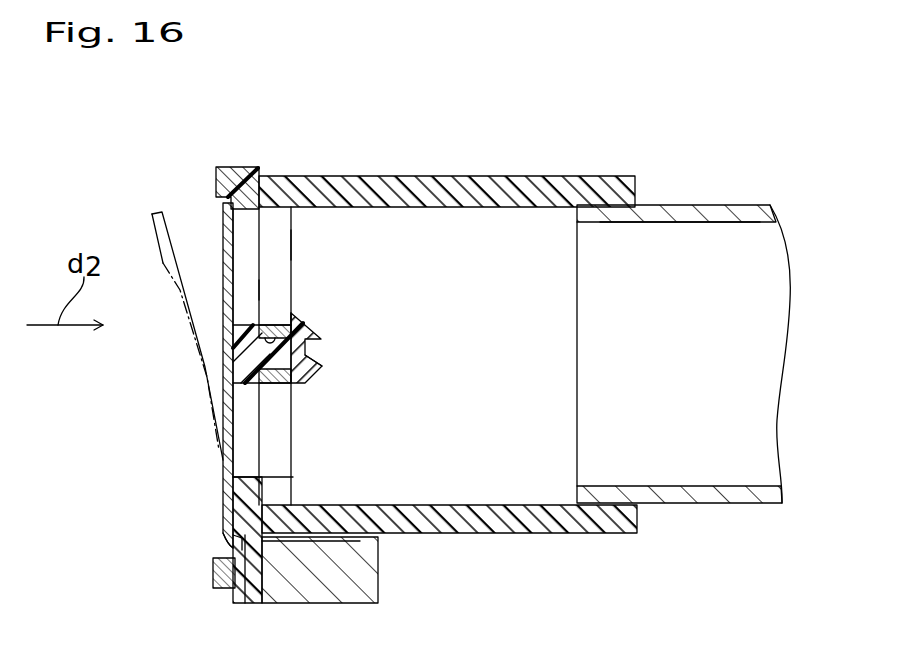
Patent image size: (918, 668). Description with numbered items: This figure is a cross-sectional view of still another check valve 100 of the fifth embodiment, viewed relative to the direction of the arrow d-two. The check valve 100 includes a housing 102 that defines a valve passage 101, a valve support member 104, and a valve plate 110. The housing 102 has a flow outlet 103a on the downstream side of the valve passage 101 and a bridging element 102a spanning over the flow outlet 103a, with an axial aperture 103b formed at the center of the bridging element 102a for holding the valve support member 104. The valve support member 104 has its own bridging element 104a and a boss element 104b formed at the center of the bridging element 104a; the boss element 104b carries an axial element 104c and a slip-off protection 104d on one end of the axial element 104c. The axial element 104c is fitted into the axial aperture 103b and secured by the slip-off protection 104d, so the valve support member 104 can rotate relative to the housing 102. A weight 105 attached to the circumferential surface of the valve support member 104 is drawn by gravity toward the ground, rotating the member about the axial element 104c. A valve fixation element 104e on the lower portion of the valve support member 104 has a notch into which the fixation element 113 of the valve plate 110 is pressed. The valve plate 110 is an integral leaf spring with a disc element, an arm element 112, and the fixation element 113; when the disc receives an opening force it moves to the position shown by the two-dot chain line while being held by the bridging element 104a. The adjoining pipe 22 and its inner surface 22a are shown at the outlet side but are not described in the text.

The check valve 100 is at (533, 130).
The valve passage 101 is at (517, 207).
The housing 102 is at (405, 174).
The bridging element 102a is at (291, 243).
The flow outlet 103a is at (278, 287).
The axial aperture 103b is at (283, 343).
The valve support member 104 is at (246, 165).
The bridging element 104a is at (250, 425).
The boss element 104b is at (262, 388).
The axial element 104c is at (322, 340).
The slip-off protection 104d is at (305, 383).
The valve fixation element 104e is at (223, 583).
The weight 105 is at (345, 597).
The valve plate 110 is at (214, 231).
The arm element 112 is at (223, 515).
The fixation element 113 is at (222, 565).
The pipe 22 is at (717, 205).
The inner surface of pipe 22a is at (748, 222).